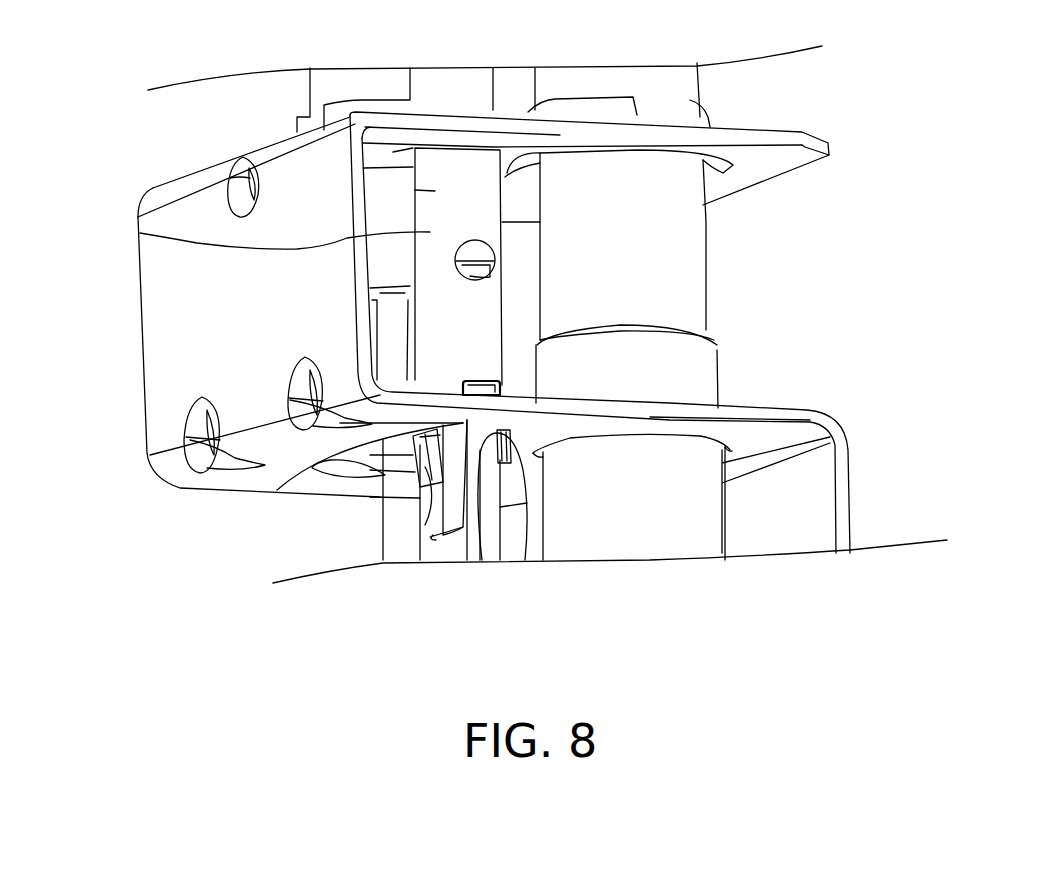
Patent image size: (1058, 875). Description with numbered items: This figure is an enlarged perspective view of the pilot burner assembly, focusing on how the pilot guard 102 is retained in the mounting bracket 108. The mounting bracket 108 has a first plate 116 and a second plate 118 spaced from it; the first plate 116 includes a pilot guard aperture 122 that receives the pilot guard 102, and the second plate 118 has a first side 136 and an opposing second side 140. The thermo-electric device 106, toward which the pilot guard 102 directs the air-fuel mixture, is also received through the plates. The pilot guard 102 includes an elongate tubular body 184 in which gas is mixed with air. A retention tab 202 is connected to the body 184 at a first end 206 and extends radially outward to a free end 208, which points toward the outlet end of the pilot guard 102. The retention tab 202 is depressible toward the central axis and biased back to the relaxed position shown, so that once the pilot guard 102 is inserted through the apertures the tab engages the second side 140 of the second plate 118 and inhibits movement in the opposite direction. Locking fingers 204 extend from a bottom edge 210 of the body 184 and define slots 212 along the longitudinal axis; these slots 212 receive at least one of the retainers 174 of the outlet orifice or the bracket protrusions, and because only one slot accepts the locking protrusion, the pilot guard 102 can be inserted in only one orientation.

The pilot guard 102 is at (447, 192).
The thermo-electric device 106 is at (707, 247).
The mounting bracket 108 is at (142, 313).
The first plate 116 is at (790, 130).
The second plate 118 is at (813, 410).
The pilot guard aperture 122 is at (433, 143).
The first side 136 is at (777, 405).
The second side 140 is at (760, 440).
The retainers 174 is at (473, 380).
The elongate tubular body 184 is at (140, 235).
The retention tab 202 is at (425, 460).
The locking fingers 204 is at (453, 555).
The first end 206 is at (423, 520).
The free end 208 is at (287, 480).
The bottom edge 210 is at (494, 380).
The slots 212 is at (477, 557).